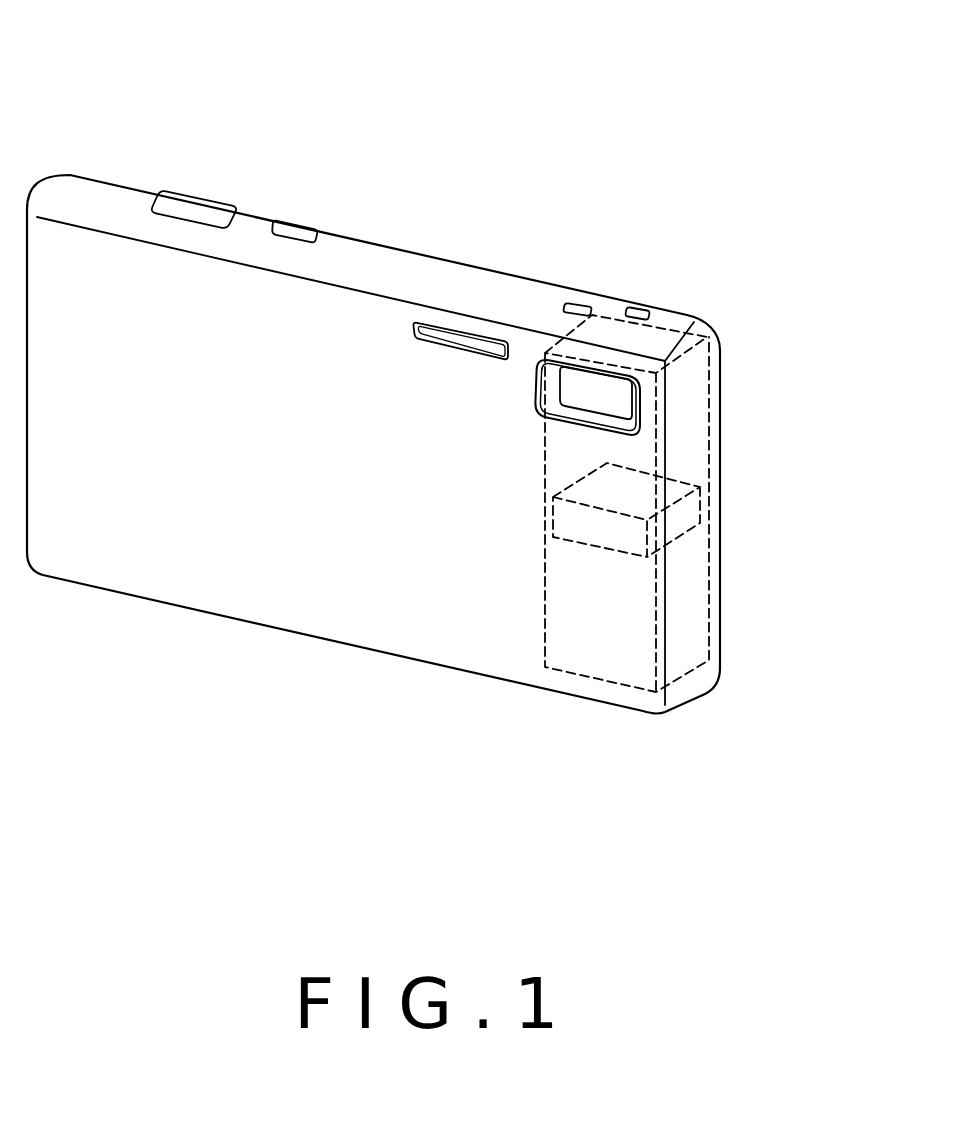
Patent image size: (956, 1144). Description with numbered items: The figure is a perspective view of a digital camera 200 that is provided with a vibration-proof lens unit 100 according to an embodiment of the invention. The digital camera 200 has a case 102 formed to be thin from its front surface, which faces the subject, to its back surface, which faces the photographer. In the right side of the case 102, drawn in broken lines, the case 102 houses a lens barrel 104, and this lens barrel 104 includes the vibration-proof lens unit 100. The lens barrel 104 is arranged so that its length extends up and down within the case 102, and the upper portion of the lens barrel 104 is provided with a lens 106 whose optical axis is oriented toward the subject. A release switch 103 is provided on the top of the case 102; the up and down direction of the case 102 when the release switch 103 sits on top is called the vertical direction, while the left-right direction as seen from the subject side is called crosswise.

The digital camera 200 is at (135, 57).
The case 102 is at (445, 257).
The release switch 103 is at (205, 205).
The lens 106 is at (600, 388).
The lens barrel 104 is at (710, 457).
The vibration-proof lens unit 100 is at (703, 503).